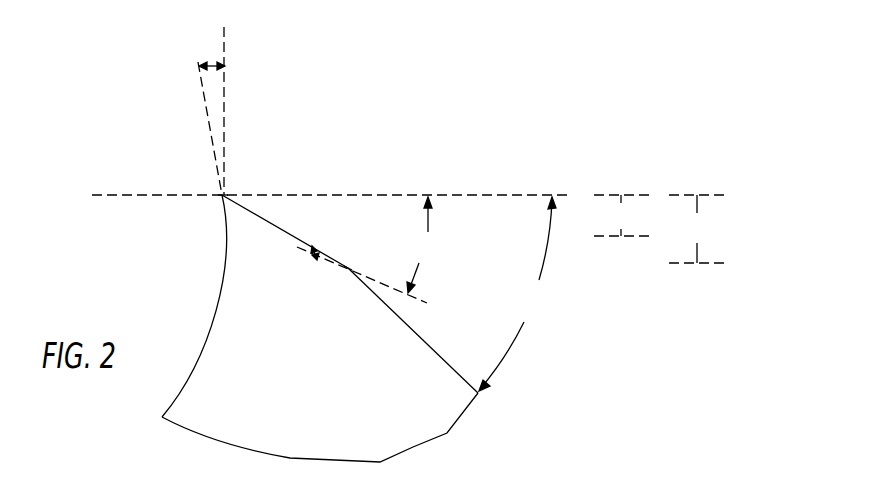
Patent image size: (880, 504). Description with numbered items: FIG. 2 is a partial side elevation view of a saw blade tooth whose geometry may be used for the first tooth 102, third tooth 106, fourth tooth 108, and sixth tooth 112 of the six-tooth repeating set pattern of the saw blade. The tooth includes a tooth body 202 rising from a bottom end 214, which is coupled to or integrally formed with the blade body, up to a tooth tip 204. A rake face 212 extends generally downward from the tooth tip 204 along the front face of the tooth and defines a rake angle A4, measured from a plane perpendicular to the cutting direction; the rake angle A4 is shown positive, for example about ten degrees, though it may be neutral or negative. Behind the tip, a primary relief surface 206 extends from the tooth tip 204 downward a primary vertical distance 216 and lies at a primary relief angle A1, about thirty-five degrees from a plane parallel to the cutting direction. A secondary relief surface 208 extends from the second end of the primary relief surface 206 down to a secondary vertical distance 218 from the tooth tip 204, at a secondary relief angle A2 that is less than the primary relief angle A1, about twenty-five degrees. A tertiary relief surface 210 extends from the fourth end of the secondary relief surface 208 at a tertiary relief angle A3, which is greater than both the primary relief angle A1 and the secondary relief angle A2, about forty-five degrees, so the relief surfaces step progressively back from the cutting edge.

The first tooth 102 is at (431, 255).
The third tooth 106 is at (431, 255).
The fourth tooth 108 is at (431, 255).
The sixth tooth 112 is at (510, 78).
The tooth body 202 is at (334, 384).
The tooth tip 204 is at (222, 197).
The primary relief surface 206 is at (255, 213).
The secondary relief surface 208 is at (331, 257).
The tertiary relief surface 210 is at (425, 341).
The rake face 212 is at (227, 237).
The bottom end 214 is at (413, 450).
The primary vertical distance 216 is at (622, 215).
The secondary vertical distance 218 is at (697, 229).
The primary relief angle A1 is at (316, 253).
The secondary relief angle A2 is at (420, 245).
The tertiary relief angle A3 is at (517, 294).
The rake angle A4 is at (212, 60).